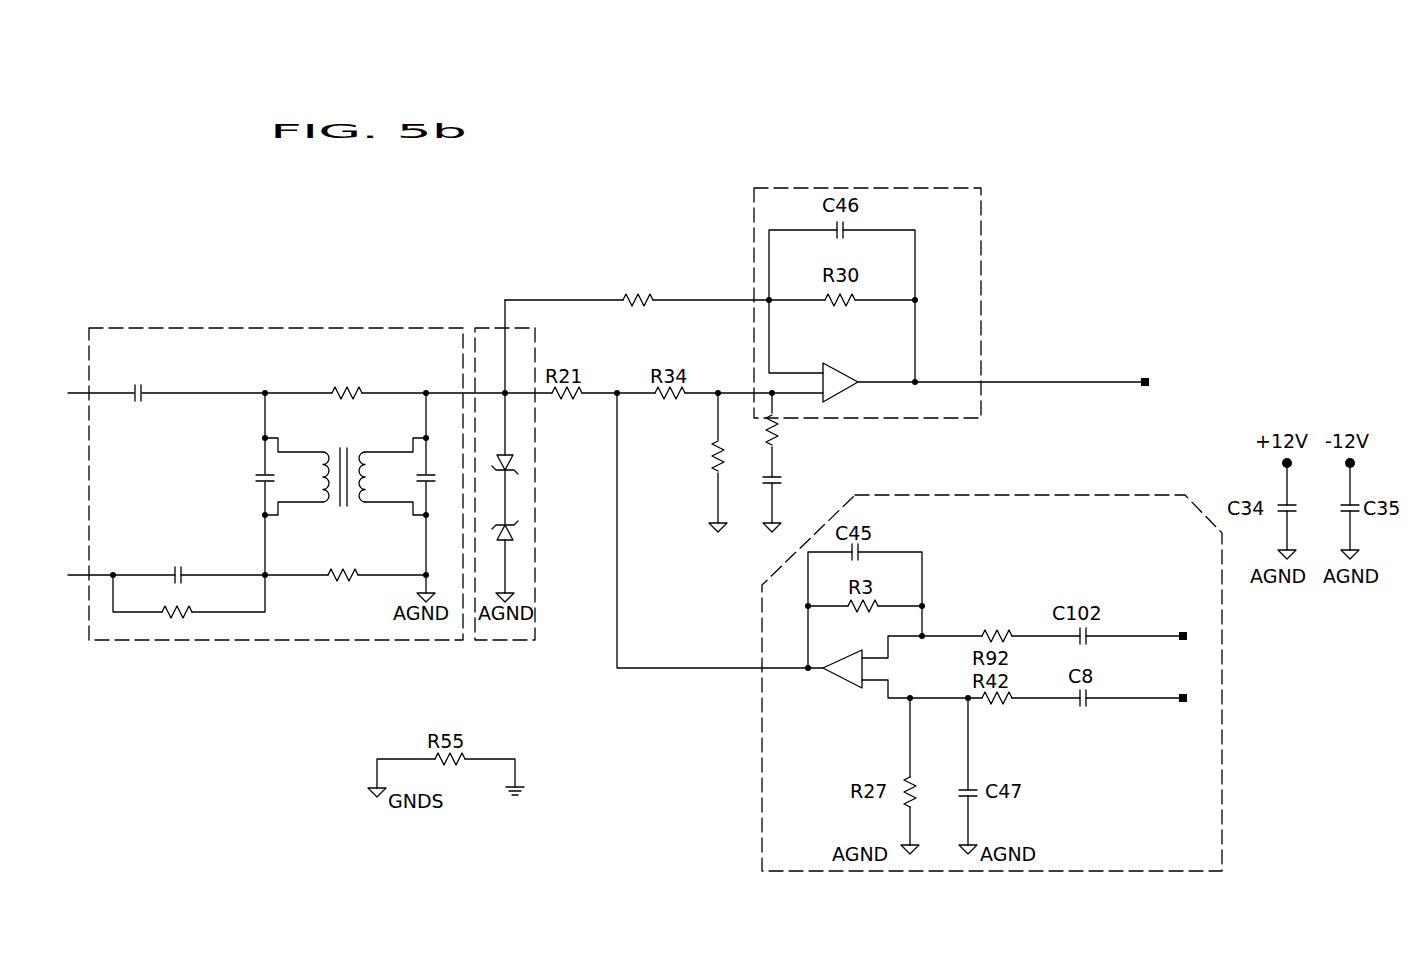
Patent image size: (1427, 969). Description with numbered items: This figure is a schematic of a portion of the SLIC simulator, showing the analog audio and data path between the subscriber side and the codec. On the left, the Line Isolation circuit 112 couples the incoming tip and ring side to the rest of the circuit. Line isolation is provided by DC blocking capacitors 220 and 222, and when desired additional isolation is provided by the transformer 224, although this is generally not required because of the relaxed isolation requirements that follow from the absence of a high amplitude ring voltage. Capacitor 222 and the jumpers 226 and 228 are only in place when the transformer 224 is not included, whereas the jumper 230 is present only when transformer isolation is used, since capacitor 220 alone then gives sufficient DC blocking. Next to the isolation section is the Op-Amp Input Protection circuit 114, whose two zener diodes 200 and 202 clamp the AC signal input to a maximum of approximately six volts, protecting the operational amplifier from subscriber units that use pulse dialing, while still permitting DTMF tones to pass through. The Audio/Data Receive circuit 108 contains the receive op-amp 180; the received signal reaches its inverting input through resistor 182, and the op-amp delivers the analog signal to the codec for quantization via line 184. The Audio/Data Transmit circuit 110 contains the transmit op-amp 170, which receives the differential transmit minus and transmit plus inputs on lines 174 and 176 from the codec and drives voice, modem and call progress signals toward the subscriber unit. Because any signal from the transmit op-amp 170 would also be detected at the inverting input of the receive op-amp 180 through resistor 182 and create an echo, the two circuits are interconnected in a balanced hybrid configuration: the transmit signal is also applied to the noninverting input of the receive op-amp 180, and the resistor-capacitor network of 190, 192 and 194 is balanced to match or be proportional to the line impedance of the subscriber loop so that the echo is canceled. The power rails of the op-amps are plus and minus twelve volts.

The Audio/Data Receive circuit 108 is at (982, 240).
The Audio/Data Transmit circuit 110 is at (762, 775).
The Line Isolation circuit 112 is at (224, 316).
The Op-Amp Input Protection circuit 114 is at (482, 318).
The transmit op-amp 170 is at (840, 681).
The line 174 is at (1134, 641).
The line 176 is at (1158, 703).
The receive op-amp 180 is at (840, 393).
The resistor 182 is at (648, 258).
The line 184 is at (1028, 380).
The resistor-capacitor network element 190 is at (713, 473).
The resistor-capacitor network element 192 is at (810, 450).
The resistor-capacitor network element 194 is at (840, 484).
The zener diode 200 is at (510, 457).
The zener diode 202 is at (512, 530).
The DC blocking capacitor 220 is at (147, 388).
The DC blocking capacitor 222 is at (185, 567).
The transformer 224 is at (353, 416).
The jumper 226 is at (327, 582).
The jumper 228 is at (332, 393).
The jumper 230 is at (167, 610).